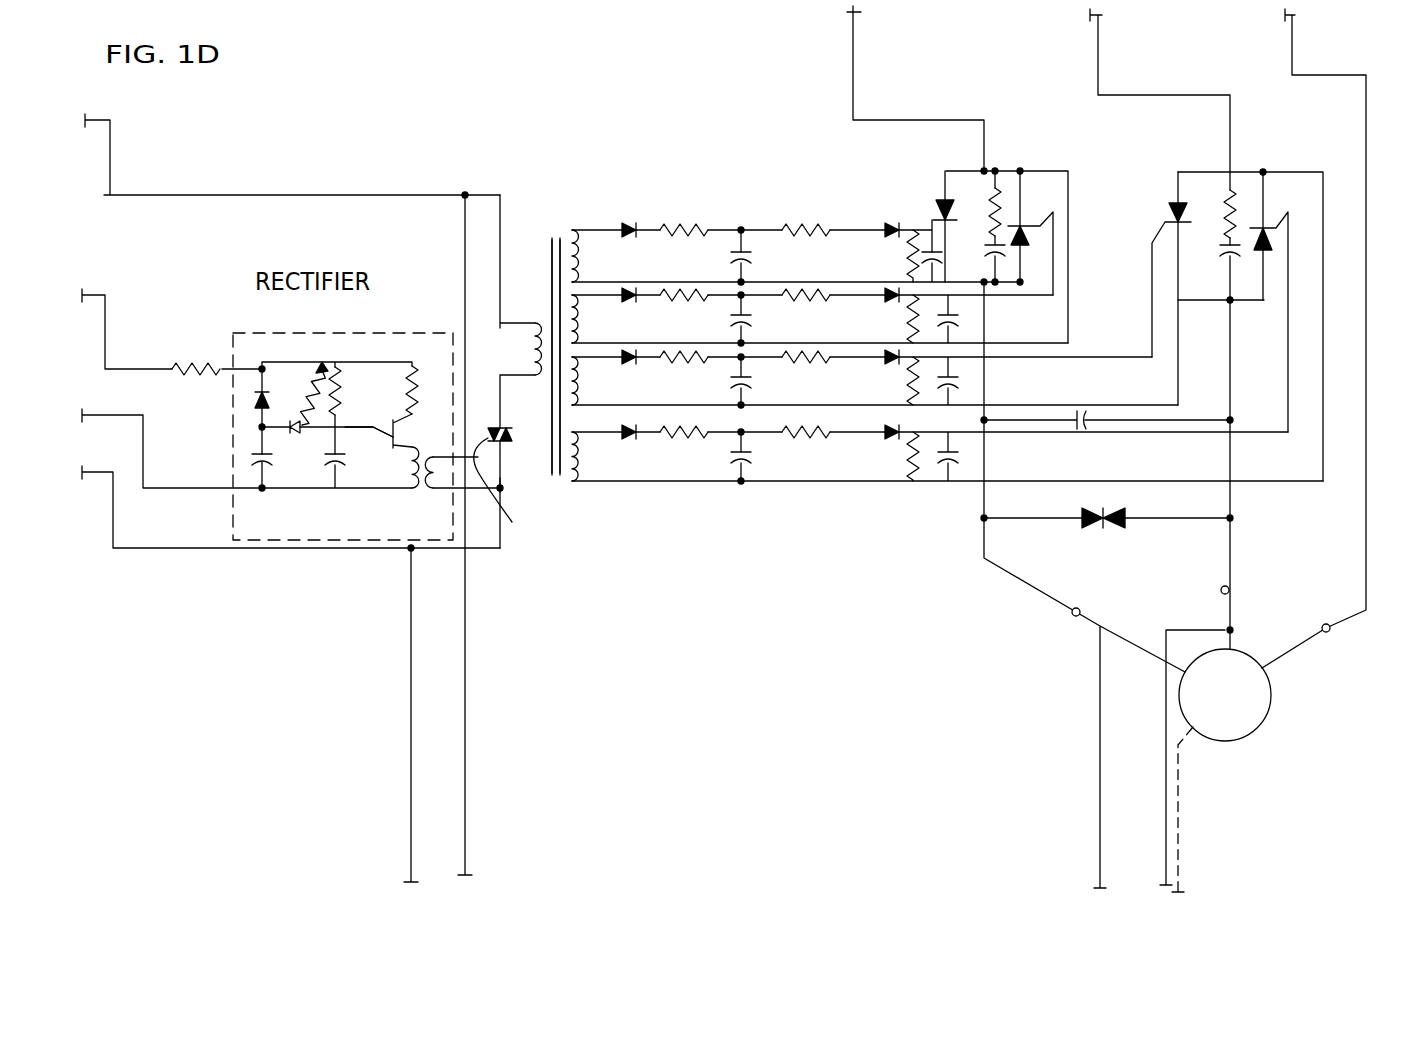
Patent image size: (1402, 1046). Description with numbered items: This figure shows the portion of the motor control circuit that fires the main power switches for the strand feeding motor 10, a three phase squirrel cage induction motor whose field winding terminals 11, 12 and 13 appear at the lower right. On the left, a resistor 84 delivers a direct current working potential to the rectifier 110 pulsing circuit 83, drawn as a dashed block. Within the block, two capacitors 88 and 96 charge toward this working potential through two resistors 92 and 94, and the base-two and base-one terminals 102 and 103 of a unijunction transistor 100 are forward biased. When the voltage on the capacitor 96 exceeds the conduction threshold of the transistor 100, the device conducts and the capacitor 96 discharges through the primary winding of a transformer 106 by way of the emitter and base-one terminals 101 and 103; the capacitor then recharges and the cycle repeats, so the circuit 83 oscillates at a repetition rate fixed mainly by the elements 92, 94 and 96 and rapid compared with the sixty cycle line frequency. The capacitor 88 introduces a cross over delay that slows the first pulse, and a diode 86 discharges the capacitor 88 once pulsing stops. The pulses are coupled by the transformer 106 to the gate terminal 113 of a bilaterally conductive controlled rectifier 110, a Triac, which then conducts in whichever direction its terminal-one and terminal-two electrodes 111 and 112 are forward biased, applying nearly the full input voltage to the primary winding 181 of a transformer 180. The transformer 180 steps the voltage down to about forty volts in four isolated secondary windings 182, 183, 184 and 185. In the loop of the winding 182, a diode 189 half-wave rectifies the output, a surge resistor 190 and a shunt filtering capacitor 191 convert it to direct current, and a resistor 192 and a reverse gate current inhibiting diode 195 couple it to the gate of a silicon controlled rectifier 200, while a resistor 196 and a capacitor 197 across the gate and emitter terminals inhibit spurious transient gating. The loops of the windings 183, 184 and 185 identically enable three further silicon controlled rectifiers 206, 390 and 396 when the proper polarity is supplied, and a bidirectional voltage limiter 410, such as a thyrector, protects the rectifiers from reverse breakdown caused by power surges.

The motor 10 is at (1237, 713).
The field winding terminal 11 is at (1073, 616).
The field winding terminal 12 is at (1233, 590).
The field winding terminal 13 is at (1326, 619).
The pulsing circuit 83 is at (344, 417).
The resistor 84 is at (200, 365).
The diode 86 is at (252, 405).
The capacitor 88 is at (258, 463).
The resistor 92 is at (299, 393).
The resistor 94 is at (341, 399).
The capacitor 96 is at (345, 452).
The unijunction transistor 100 is at (452, 444).
The emitter terminal 101 is at (349, 425).
The base-2 terminal 102 is at (432, 390).
The base-1 terminal 103 is at (410, 450).
The transformer 106 is at (427, 490).
The bilaterally conductive controlled rectifier 110 is at (541, 473).
The terminal-1 electrode 111 is at (505, 403).
The terminal-2 electrode 112 is at (500, 490).
The gate terminal 113 is at (518, 494).
The transformer 180 is at (568, 209).
The primary winding 181 is at (520, 323).
The secondary winding 182 is at (604, 256).
The secondary winding 183 is at (604, 319).
The secondary winding 184 is at (604, 381).
The secondary winding 185 is at (605, 456).
The diode 189 is at (630, 224).
The surge resistor 190 is at (687, 227).
The shunt filtering capacitor 191 is at (752, 256).
The resistor 192 is at (797, 227).
The reverse gate current inhibiting diode 195 is at (893, 226).
The resistor 196 is at (908, 255).
The capacitor 197 is at (936, 265).
The silicon controlled rectifier 200 is at (942, 203).
The silicon controlled rectifier 206 is at (1032, 233).
The silicon controlled rectifier 390 is at (1168, 212).
The silicon controlled rectifier 396 is at (1272, 240).
The bidirectional voltage limiter 410 is at (1130, 533).